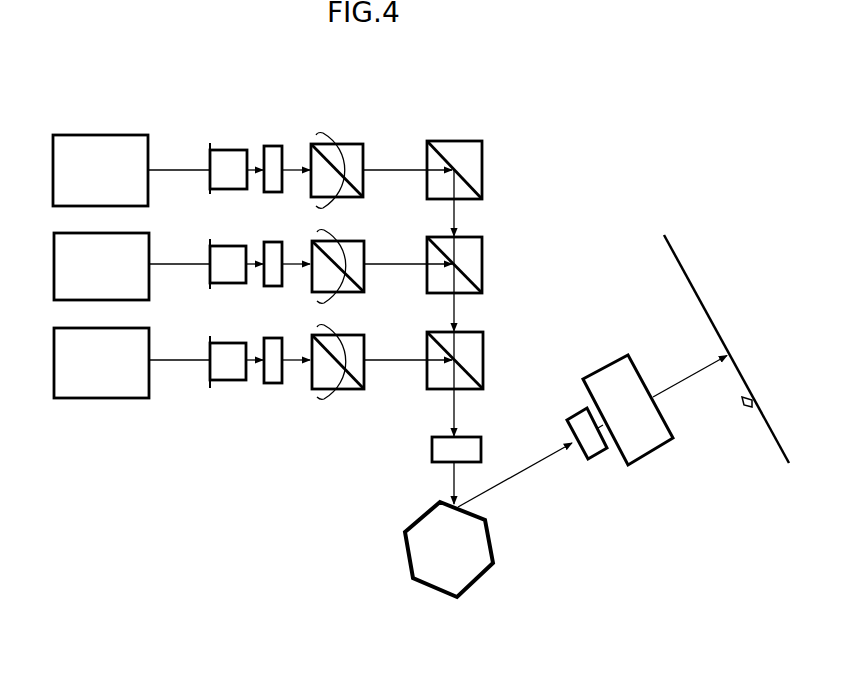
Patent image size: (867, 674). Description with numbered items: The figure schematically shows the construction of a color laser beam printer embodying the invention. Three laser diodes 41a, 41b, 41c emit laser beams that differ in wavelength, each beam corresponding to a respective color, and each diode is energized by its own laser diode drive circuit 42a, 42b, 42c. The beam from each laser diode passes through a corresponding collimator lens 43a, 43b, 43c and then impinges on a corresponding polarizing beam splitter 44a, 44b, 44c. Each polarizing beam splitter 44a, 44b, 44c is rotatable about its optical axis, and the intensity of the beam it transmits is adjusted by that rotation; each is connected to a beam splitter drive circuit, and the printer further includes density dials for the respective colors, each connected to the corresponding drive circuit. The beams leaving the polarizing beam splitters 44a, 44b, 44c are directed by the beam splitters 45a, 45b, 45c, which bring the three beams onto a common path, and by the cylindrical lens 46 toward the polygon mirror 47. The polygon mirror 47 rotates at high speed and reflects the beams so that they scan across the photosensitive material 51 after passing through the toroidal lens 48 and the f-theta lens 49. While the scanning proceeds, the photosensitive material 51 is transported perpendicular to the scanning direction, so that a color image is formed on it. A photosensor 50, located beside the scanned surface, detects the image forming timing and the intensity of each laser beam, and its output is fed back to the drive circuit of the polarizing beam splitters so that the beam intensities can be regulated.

The laser diode 41a is at (216, 157).
The laser diode 41b is at (217, 252).
The laser diode 41c is at (216, 350).
The laser diode drive circuit 42a is at (128, 135).
The laser diode drive circuit 42b is at (140, 233).
The laser diode drive circuit 42c is at (140, 328).
The collimator lens 43a is at (277, 143).
The collimator lens 43b is at (273, 240).
The collimator lens 43c is at (273, 336).
The polarizing beam splitter 44a is at (360, 142).
The polarizing beam splitter 44b is at (360, 240).
The polarizing beam splitter 44c is at (363, 334).
The beam splitter 45a is at (482, 158).
The beam splitter 45b is at (482, 262).
The beam splitter 45c is at (483, 355).
The cylindrical lens 46 is at (481, 443).
The polygon mirror 47 is at (494, 541).
The toroidal lens 48 is at (576, 410).
The f-theta lens 49 is at (609, 364).
The photosensor 50 is at (744, 408).
The photosensitive material 51 is at (694, 289).